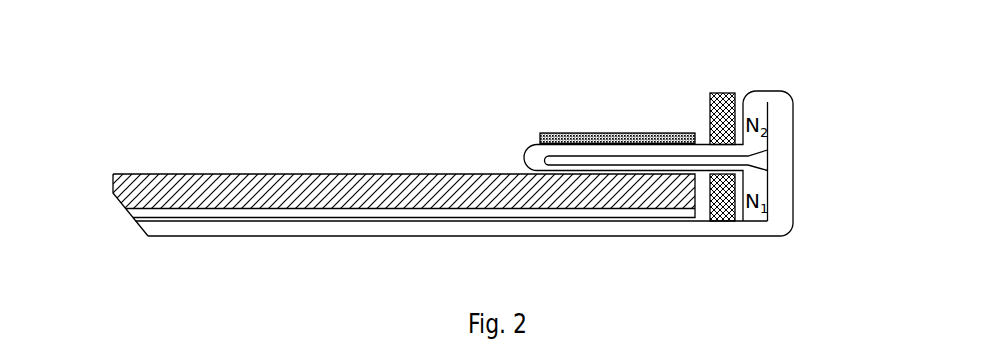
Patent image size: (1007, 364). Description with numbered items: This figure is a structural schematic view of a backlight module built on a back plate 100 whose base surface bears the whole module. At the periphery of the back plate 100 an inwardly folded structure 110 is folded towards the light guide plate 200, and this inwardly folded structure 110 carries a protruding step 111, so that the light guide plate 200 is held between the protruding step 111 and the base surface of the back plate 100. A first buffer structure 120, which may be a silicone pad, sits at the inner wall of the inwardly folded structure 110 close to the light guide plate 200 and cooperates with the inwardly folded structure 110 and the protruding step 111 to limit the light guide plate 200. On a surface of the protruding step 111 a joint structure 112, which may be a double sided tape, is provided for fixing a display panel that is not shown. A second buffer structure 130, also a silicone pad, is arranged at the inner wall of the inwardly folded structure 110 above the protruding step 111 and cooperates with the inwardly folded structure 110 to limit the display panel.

The back plate 100 is at (562, 234).
The inwardly folded structure 110 is at (785, 116).
The protruding step 111 is at (547, 153).
The joint structure 112 is at (618, 135).
The first buffer structure 120 is at (720, 213).
The second buffer structure 130 is at (724, 98).
The light guide plate 200 is at (300, 173).